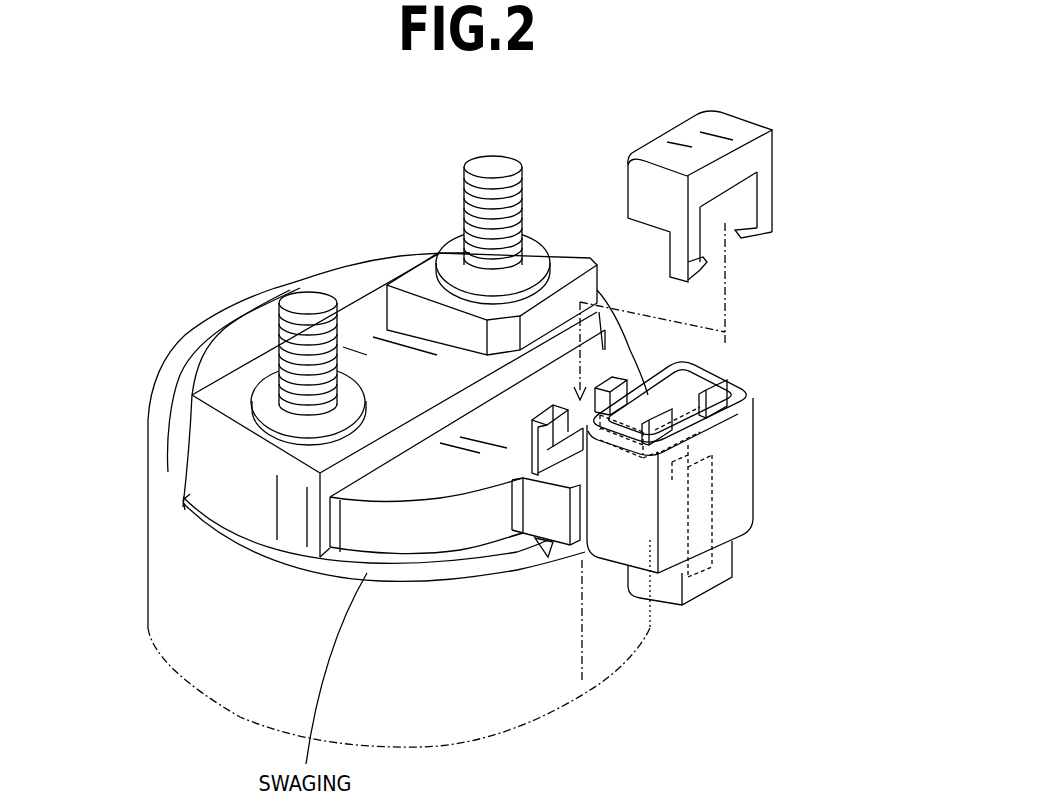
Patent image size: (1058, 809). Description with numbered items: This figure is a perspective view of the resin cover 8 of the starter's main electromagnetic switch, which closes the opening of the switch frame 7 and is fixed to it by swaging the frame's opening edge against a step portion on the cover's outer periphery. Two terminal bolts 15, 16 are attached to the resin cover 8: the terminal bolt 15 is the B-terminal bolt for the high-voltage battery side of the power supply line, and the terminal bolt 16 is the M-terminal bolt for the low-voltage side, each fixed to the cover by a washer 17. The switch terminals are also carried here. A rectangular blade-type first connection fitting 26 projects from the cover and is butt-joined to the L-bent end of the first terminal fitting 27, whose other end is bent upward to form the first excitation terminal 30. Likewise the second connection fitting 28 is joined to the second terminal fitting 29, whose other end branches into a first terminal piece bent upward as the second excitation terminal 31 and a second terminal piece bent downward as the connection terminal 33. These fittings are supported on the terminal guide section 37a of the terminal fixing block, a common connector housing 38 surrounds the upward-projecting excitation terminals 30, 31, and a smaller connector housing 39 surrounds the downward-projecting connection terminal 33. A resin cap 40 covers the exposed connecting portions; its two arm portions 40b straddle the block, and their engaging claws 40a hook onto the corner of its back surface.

The switch frame 7 is at (165, 568).
The resin cover 8 is at (365, 272).
The terminal bolt 15 is at (493, 163).
The terminal bolt 16 is at (305, 300).
The washer 17 is at (445, 255).
The first connection fitting 26 is at (607, 356).
The first terminal fitting 27 is at (660, 400).
The second connection fitting 28 is at (533, 437).
The second terminal fitting 29 is at (572, 440).
The first excitation terminal 30 is at (735, 402).
The second excitation terminal 31 is at (668, 428).
The connection terminal 33 is at (702, 543).
The terminal guide section 37a is at (553, 468).
The common connector housing 38 is at (733, 369).
The connector housing 39 is at (703, 616).
The cap 40 is at (735, 128).
The engaging claw 40a is at (741, 234).
The arm portion 40b is at (768, 195).